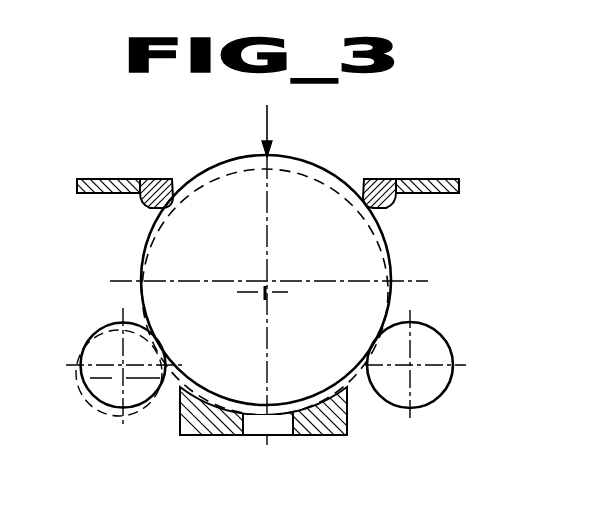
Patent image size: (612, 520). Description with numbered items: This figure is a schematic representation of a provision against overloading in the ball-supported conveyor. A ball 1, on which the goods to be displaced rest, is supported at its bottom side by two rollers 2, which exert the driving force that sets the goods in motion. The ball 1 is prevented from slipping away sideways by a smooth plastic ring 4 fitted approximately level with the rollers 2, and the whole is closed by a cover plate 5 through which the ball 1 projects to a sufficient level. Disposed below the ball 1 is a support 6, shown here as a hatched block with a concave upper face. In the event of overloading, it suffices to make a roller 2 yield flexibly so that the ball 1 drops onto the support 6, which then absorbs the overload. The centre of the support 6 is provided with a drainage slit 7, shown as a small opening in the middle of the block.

The ball 1 is at (368, 257).
The roller 2 is at (101, 338).
The smooth plastic ring 4 is at (142, 208).
The cover plate 5 is at (121, 178).
The support 6 is at (304, 429).
The drainage slit 7 is at (247, 428).